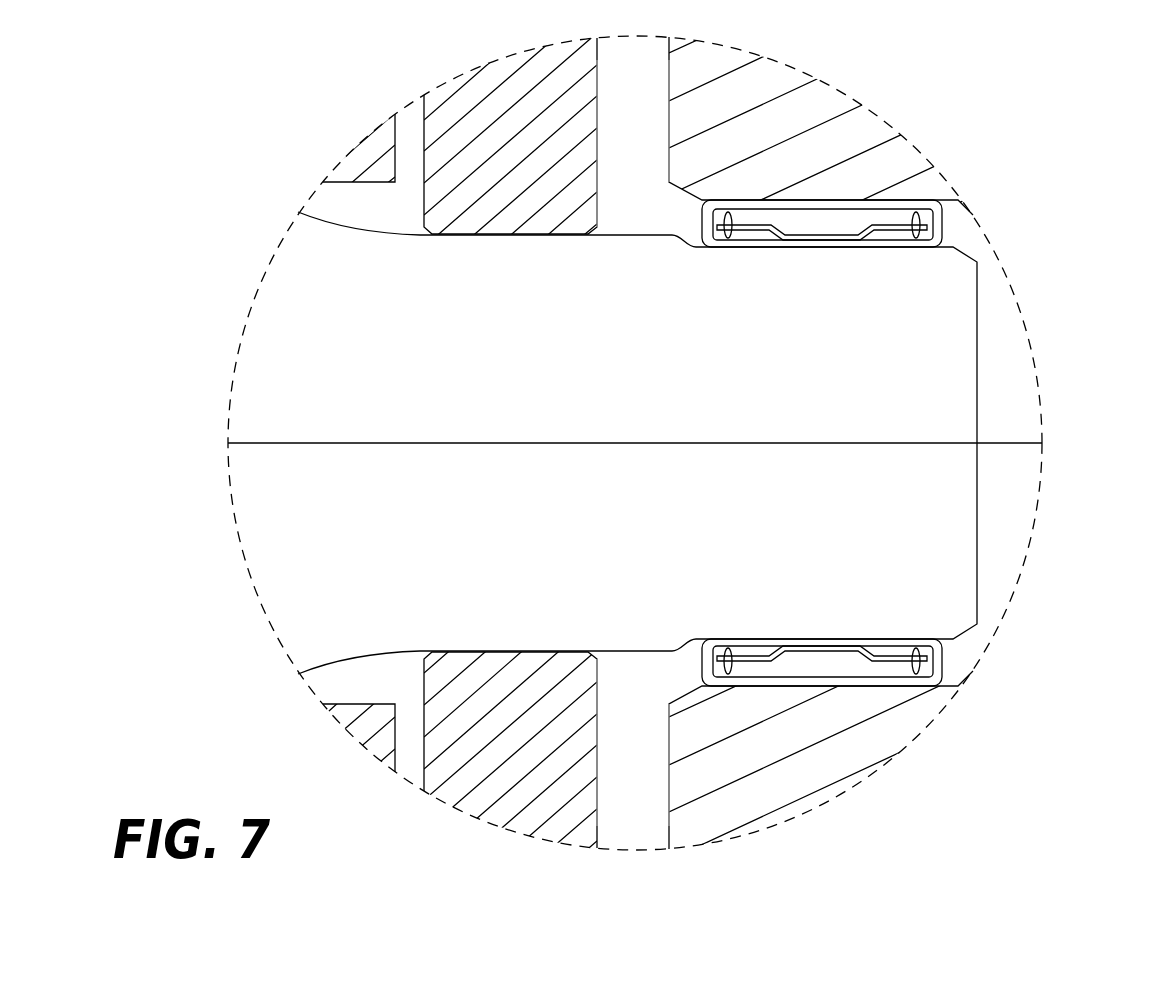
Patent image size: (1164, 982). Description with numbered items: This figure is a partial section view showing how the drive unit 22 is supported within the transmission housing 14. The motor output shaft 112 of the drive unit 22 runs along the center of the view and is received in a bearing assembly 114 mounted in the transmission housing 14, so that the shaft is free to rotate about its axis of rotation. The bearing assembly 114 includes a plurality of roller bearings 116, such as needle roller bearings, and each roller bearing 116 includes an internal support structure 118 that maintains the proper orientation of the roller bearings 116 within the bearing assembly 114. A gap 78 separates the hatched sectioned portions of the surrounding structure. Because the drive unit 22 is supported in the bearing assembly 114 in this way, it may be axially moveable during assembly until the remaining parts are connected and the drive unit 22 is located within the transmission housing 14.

The transmission housing 14 is at (830, 108).
The drive unit 22 is at (367, 157).
The passage 78 is at (597, 118).
The motor output shaft 112 is at (977, 363).
The bearing assembly 114 is at (952, 235).
The roller bearings 116 is at (893, 212).
The internal support structure 118 is at (943, 215).